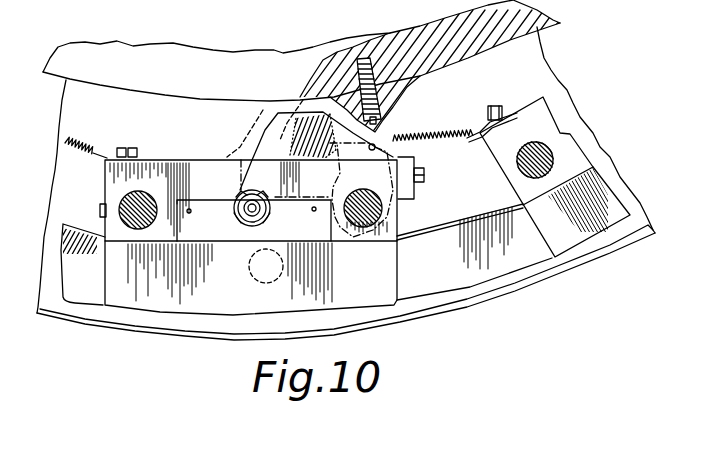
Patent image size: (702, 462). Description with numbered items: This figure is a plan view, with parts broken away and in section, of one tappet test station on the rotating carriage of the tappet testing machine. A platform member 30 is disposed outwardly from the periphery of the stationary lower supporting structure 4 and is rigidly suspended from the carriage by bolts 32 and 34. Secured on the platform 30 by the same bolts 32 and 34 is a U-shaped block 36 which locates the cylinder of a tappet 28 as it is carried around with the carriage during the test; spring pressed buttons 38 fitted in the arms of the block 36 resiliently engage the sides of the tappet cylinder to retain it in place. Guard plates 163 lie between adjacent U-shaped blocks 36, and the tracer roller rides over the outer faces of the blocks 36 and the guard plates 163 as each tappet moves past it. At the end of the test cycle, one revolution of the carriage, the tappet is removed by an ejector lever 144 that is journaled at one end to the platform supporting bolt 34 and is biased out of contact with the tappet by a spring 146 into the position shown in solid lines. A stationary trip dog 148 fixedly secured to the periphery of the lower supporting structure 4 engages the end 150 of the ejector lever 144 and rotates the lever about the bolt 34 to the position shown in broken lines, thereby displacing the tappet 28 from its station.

The lower supporting structure 4 is at (548, 28).
The tappet 28 is at (250, 264).
The platform member 30 is at (581, 237).
The bolt 32 is at (120, 200).
The bolt 34 is at (372, 220).
The U-shaped block 36 is at (160, 159).
The spring pressed button 38 is at (234, 205).
The ejector lever 144 is at (260, 157).
The spring 146 is at (81, 140).
The stationary trip dog 148 is at (292, 100).
The end of ejector lever 150 is at (291, 143).
The guard plate 163 is at (490, 212).